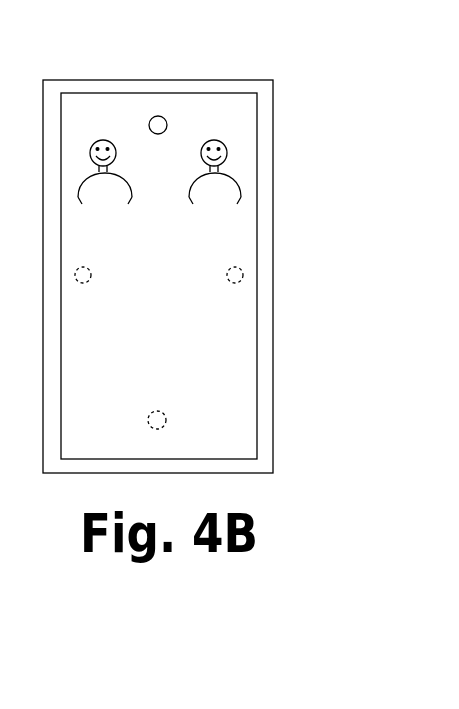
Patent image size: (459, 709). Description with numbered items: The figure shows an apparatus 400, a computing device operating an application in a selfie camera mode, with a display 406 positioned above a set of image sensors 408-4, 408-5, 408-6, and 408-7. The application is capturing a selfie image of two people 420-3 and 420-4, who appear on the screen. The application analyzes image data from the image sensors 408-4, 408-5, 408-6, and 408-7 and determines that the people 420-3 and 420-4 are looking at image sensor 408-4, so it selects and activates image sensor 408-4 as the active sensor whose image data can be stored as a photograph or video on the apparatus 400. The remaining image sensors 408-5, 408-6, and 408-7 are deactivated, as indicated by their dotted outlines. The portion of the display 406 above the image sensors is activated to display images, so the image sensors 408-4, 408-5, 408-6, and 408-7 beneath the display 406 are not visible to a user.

The apparatus 400 is at (255, 80).
The display 406 is at (257, 134).
The image sensor 408-4 is at (158, 134).
The image sensor 408-5 is at (85, 283).
The image sensor 408-6 is at (233, 283).
The image sensor 408-7 is at (166, 421).
The person 420-3 is at (101, 187).
The person 420-4 is at (218, 187).